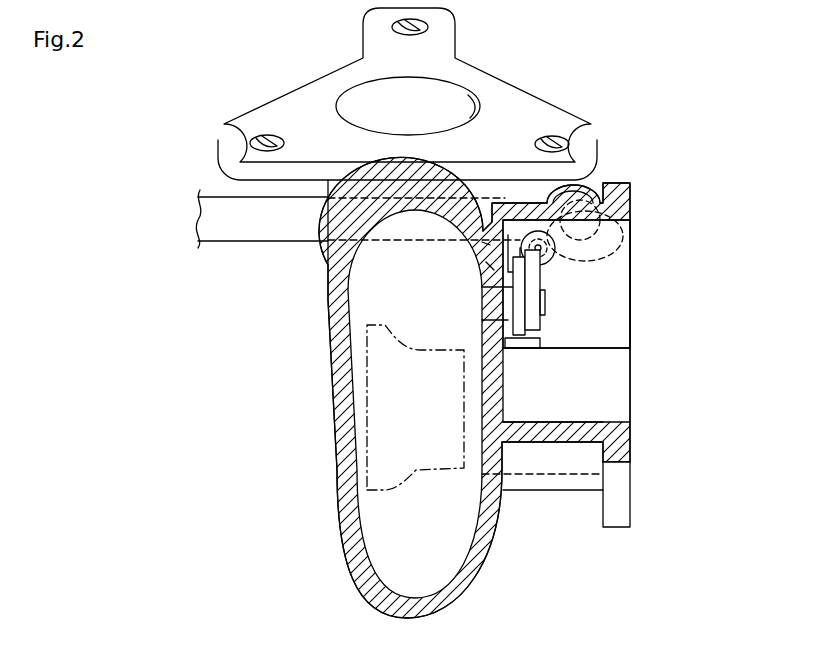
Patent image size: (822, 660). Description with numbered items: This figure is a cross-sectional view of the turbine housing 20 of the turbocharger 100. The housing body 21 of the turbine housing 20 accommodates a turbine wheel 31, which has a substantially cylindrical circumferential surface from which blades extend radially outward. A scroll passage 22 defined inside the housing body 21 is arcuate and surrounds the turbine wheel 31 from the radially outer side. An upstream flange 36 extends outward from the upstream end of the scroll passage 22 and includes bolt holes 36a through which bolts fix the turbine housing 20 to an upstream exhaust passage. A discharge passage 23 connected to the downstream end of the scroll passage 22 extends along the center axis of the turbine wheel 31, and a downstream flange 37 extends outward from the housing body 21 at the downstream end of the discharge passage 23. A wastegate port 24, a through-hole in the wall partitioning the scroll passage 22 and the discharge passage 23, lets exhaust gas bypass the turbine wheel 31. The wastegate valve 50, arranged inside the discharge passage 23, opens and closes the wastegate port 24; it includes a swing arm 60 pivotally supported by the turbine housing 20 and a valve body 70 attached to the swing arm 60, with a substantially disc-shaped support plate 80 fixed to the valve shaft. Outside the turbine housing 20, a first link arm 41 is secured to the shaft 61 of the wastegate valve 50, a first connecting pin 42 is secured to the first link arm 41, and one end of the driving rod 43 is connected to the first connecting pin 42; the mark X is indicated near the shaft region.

The turbocharger 100 is at (591, 92).
The upstream flange 36 is at (270, 117).
The bolt holes 36a is at (420, 30).
The scroll passage 22 is at (470, 100).
The driving rod 43 is at (232, 243).
The turbine housing 20 is at (336, 465).
The housing body 21 is at (336, 525).
The wastegate port 24 is at (482, 320).
The turbine wheel 31 is at (418, 470).
The wastegate valve 50 is at (586, 302).
The discharge passage 23 is at (585, 425).
The downstream flange 37 is at (630, 500).
The swing arm 60 is at (554, 256).
The shaft 61 is at (490, 266).
The reference point X is at (481, 245).
The first link arm 41 is at (590, 258).
The first connecting pin 42 is at (600, 240).
The support plate 80 is at (541, 335).
The valve body 70 is at (520, 347).